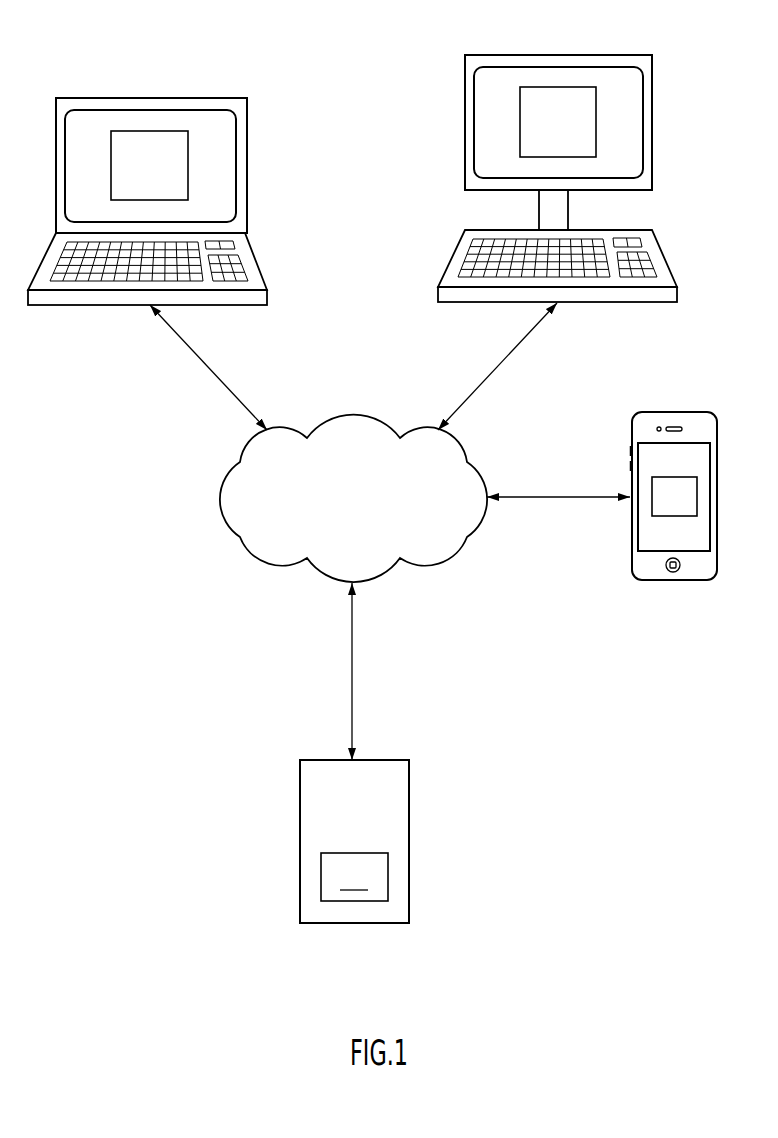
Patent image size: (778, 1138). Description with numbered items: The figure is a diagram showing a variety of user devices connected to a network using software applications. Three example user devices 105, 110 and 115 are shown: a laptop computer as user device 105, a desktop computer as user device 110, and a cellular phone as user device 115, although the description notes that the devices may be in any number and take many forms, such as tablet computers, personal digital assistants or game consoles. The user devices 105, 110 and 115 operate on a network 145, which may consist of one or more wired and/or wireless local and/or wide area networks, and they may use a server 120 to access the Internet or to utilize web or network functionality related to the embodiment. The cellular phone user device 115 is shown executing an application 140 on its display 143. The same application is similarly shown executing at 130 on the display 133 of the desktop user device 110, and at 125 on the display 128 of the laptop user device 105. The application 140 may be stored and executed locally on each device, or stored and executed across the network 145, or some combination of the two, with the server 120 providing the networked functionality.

The user device 105 is at (159, 178).
The user device 110 is at (546, 153).
The user device 115 is at (539, 638).
The server 120 is at (409, 812).
The application 125 is at (172, 130).
The display 128 is at (220, 188).
The application 130 is at (543, 87).
The display 133 is at (480, 145).
The application 140 is at (697, 497).
The display 143 is at (652, 533).
The network 145 is at (338, 508).